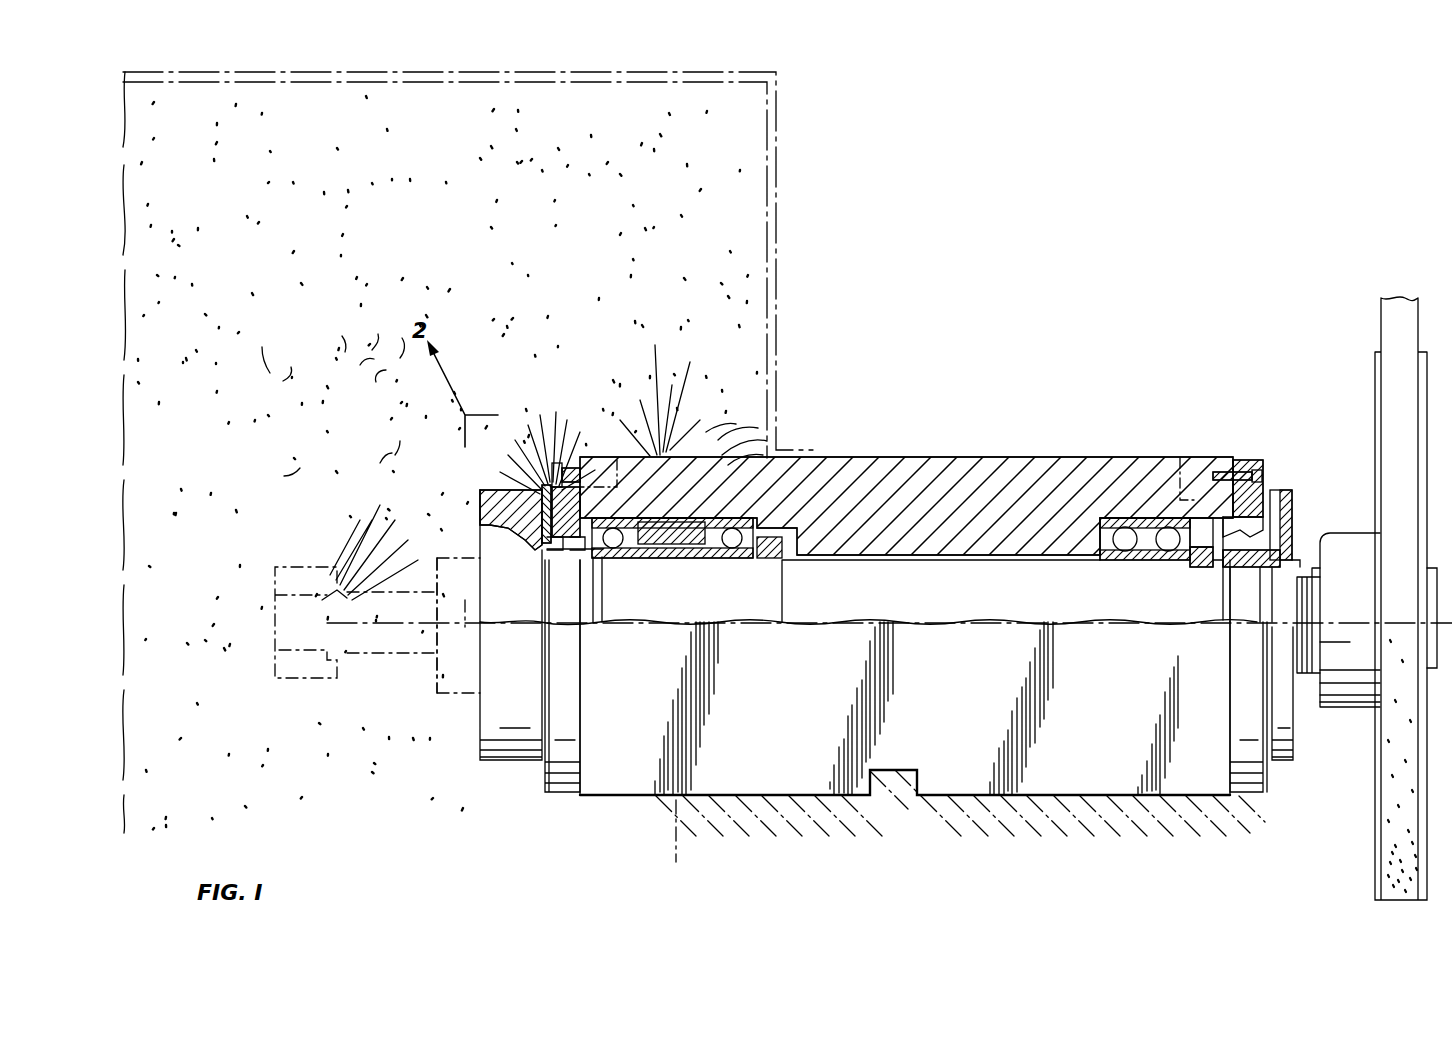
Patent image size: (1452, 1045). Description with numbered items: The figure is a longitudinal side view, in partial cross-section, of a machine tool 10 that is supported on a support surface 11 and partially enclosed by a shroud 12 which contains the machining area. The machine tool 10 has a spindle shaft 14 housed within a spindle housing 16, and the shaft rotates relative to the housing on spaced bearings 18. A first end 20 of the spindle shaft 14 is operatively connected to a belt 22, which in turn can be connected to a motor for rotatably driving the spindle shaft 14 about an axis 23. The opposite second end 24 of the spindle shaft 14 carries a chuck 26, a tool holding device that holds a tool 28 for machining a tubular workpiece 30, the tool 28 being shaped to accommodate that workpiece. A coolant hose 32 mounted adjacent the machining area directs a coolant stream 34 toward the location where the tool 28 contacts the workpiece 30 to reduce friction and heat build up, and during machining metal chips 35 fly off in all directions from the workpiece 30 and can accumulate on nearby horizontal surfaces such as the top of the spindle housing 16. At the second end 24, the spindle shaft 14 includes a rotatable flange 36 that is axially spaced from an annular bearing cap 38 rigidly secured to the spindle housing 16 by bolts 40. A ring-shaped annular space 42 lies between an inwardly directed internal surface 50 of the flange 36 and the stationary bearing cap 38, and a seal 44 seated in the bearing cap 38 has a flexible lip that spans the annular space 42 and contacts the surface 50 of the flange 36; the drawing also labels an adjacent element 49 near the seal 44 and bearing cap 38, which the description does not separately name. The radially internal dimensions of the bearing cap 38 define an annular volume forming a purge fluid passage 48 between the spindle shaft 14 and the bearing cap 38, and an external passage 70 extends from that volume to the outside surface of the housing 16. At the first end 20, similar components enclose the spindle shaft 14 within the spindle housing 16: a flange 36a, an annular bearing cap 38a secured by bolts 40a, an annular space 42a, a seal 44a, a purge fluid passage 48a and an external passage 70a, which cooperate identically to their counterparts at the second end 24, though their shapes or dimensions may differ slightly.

The machine tool 10 is at (905, 332).
The support surface 11 is at (796, 820).
The shroud 12 is at (776, 178).
The spindle shaft 14 is at (878, 600).
The spindle housing 16 is at (957, 484).
The bearings 18 is at (724, 553).
The first end 20 is at (1287, 840).
The belt 22 is at (1393, 324).
The axis 23 is at (1397, 620).
The second end 24 is at (472, 782).
The chuck 26 is at (440, 702).
The tool 28 is at (326, 606).
The workpiece 30 is at (306, 560).
The coolant hose 32 is at (359, 500).
The coolant stream 34 is at (322, 524).
The metal chips 35 is at (388, 364).
The flange 36 is at (509, 750).
The flange 36a is at (1287, 760).
The annular bearing cap 38 is at (576, 779).
The annular bearing cap 38a is at (1250, 795).
The bolts 40 is at (548, 480).
The bolts 40a is at (1265, 488).
The annular space 42 is at (547, 484).
The annular space 42a is at (1273, 490).
The seal 44 is at (548, 552).
The seal 44a is at (1258, 568).
The purge fluid passage 48 is at (556, 538).
The purge fluid passage 48a is at (1222, 567).
The seal lip 49 is at (584, 544).
The internal surface 50 is at (480, 497).
The external passage 70 is at (616, 482).
The external passage 70a is at (1190, 474).